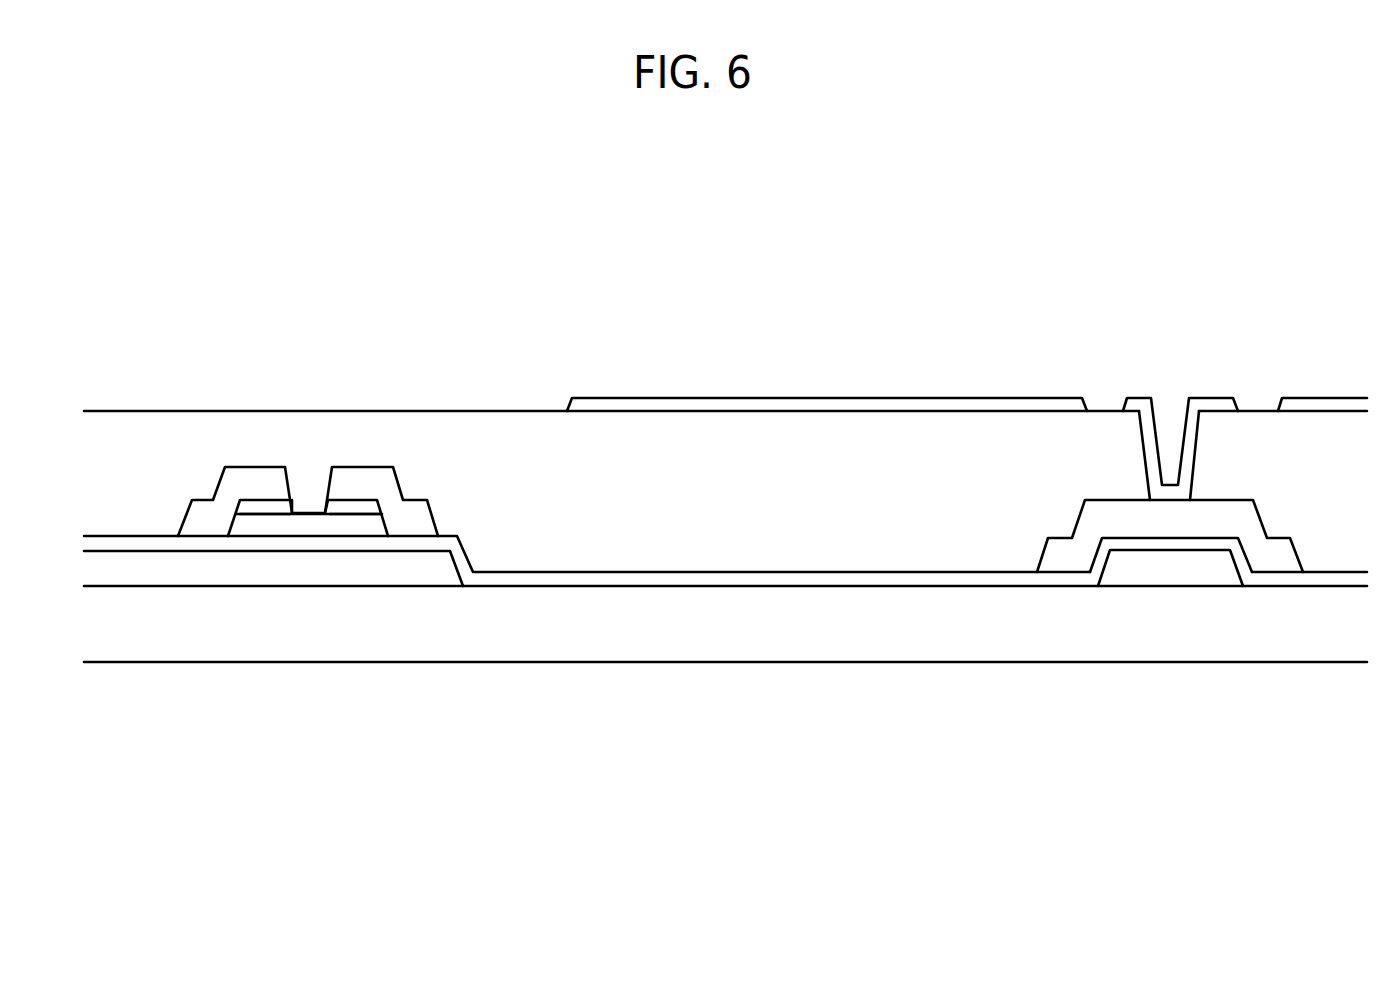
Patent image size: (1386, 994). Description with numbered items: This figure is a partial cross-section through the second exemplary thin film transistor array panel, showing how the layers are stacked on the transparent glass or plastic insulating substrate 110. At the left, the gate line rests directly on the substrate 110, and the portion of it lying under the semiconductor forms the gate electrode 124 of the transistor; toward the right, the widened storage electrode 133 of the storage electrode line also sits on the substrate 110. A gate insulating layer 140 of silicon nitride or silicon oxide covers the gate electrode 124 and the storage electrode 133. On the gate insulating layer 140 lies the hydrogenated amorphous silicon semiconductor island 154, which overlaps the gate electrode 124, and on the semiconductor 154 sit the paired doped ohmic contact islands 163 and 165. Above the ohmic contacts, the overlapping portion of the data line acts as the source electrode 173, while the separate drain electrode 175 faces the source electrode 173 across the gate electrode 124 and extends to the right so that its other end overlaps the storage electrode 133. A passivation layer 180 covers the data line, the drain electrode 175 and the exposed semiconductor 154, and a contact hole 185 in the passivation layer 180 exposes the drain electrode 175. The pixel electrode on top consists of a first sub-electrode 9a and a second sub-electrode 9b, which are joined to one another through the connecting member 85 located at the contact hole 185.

The substrate 110 is at (985, 642).
The gate electrode 124 is at (313, 573).
The storage electrode 133 is at (1168, 575).
The gate insulating layer 140 is at (665, 580).
The semiconductor island 154 is at (265, 527).
The ohmic contact island 163 is at (250, 508).
The ohmic contact island 165 is at (353, 508).
The source electrode 173 is at (200, 529).
The drain electrode 175 is at (407, 520).
The passivation layer 180 is at (790, 548).
The contact hole 185 is at (1190, 465).
The connecting member 85 is at (1218, 403).
The first sub-electrode 9a is at (992, 410).
The second sub-electrode 9b is at (1320, 405).